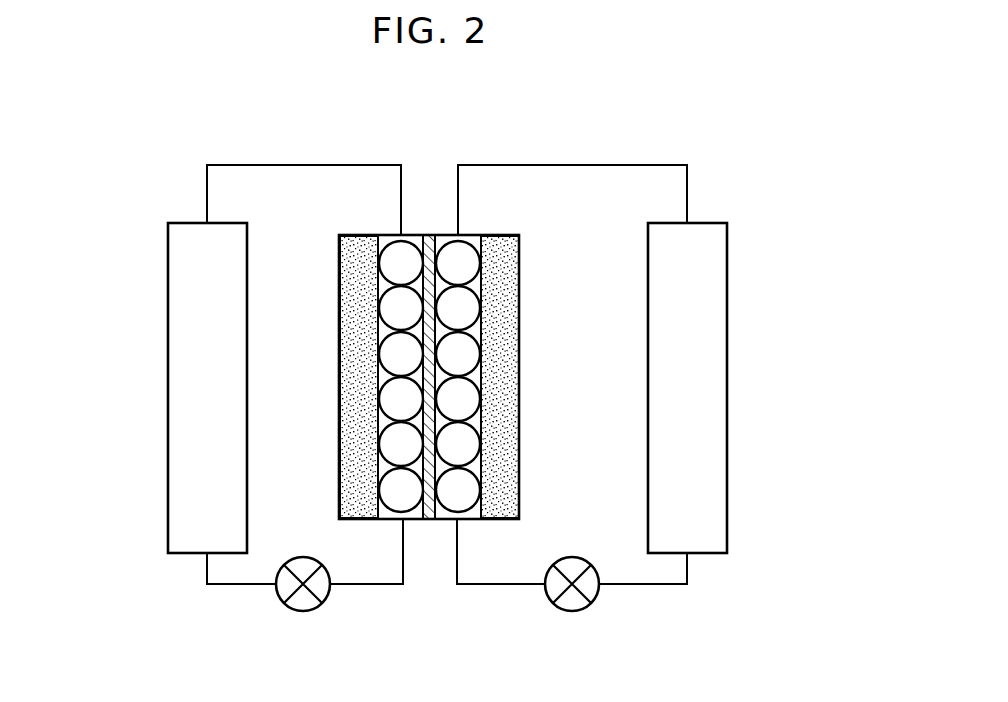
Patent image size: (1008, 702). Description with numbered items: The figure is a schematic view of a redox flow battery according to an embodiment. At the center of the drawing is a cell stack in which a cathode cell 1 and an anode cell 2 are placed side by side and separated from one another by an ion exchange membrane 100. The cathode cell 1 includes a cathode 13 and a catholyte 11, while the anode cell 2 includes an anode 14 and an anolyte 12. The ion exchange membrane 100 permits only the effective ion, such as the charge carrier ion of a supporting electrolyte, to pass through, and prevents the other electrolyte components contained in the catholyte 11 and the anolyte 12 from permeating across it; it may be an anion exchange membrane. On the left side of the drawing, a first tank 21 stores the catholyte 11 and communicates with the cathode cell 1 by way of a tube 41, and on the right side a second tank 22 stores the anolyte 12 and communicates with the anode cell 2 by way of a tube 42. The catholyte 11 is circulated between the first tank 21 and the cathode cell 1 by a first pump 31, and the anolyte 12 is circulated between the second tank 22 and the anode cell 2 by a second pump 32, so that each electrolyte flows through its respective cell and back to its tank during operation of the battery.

The ion exchange membrane 100 is at (430, 234).
The cathode cell 1 is at (338, 270).
The anode cell 2 is at (520, 270).
The catholyte 11 is at (388, 519).
The anolyte 12 is at (470, 519).
The cathode 13 is at (358, 467).
The anode 14 is at (500, 467).
The first tank 21 is at (170, 289).
The second tank 22 is at (720, 290).
The first pump 31 is at (303, 611).
The second pump 32 is at (572, 611).
The tube 41 is at (310, 165).
The tube 42 is at (572, 165).